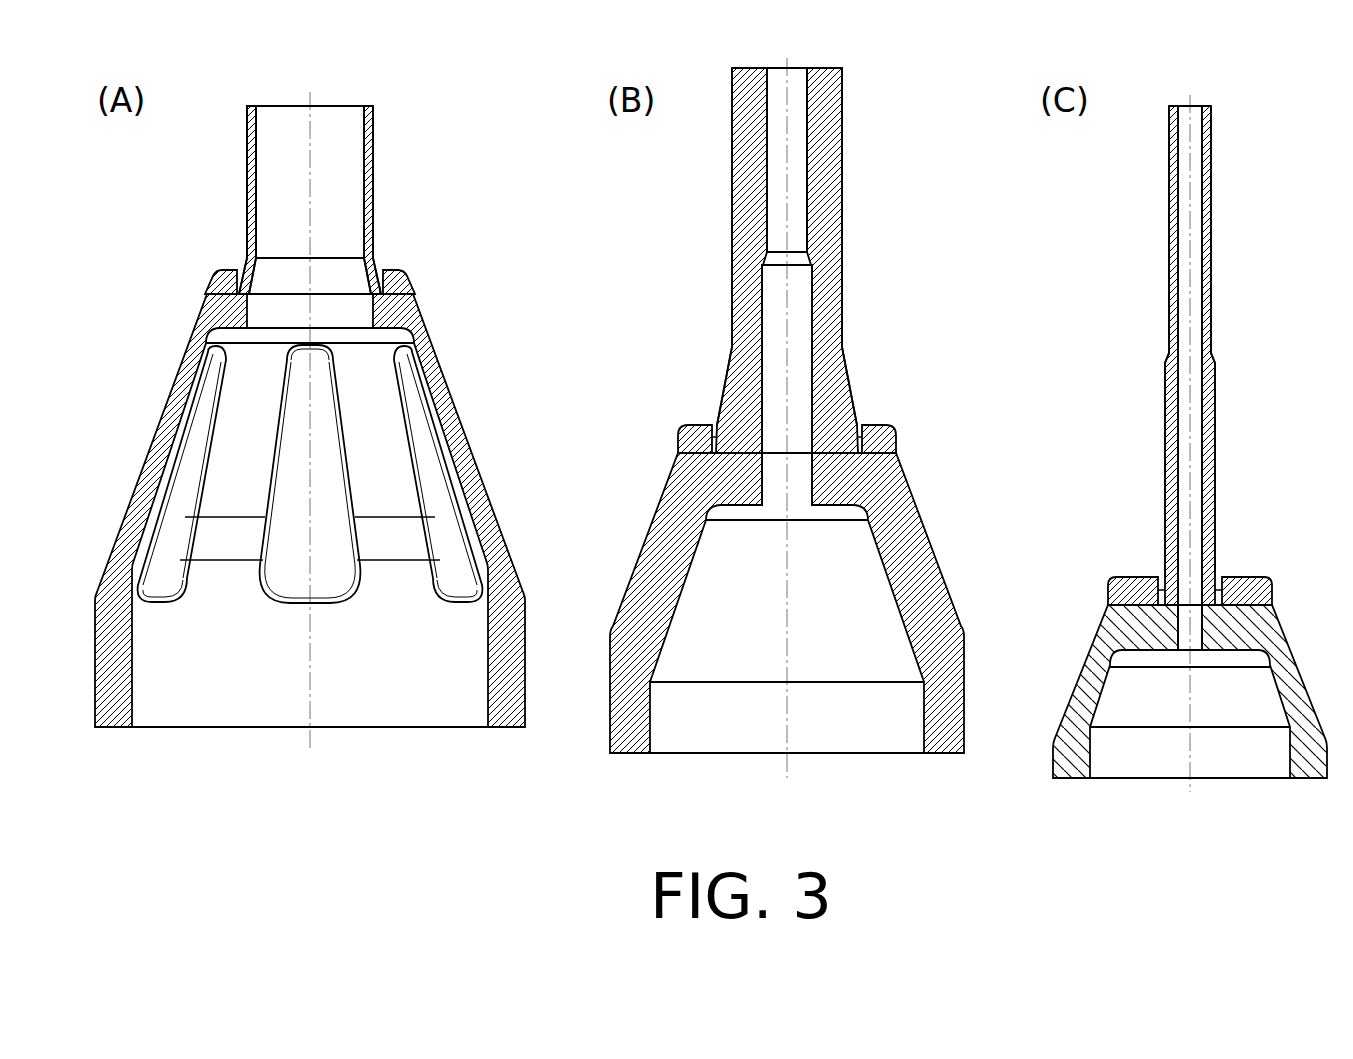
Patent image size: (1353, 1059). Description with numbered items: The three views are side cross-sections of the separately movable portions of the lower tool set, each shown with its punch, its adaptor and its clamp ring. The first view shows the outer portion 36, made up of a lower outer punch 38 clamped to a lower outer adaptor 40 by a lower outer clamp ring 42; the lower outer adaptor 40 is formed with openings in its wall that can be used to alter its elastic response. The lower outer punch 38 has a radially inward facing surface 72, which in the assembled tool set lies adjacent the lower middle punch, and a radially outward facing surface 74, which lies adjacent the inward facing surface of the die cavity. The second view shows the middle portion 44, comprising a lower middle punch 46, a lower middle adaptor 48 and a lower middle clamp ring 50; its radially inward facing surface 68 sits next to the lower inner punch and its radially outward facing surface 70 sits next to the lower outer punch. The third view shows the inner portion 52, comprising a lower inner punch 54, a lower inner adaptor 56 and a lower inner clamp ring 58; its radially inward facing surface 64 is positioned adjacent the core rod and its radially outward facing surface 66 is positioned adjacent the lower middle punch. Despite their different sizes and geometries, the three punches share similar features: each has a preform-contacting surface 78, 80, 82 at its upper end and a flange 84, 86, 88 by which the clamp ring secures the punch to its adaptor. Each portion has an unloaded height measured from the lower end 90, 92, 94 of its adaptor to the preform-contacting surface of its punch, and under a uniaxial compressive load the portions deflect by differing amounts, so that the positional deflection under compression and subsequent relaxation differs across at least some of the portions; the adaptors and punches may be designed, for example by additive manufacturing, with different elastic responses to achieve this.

In FIG. 3A, the outer portion 36 is at (453, 167).
In FIG. 3A, the lower outer punch 38 is at (374, 222).
In FIG. 3A, the lower outer adaptor 40 is at (428, 356).
In FIG. 3A, the lower outer clamp ring 42 is at (390, 288).
In FIG. 3A, the radially inward facing surface 72 is at (365, 153).
In FIG. 3A, the radially outward facing surface 74 is at (247, 200).
In FIG. 3A, the preform-contacting surface 78 is at (271, 99).
In FIG. 3A, the flange 84 is at (235, 288).
In FIG. 3A, the lower end 90 is at (200, 731).
In FIG. 3B, the middle portion 44 is at (904, 175).
In FIG. 3B, the lower middle punch 46 is at (830, 324).
In FIG. 3B, the lower middle adaptor 48 is at (905, 525).
In FIG. 3B, the lower middle clamp ring 50 is at (882, 441).
In FIG. 3B, the radially inward facing surface 68 is at (808, 137).
In FIG. 3B, the radially outward facing surface 70 is at (846, 240).
In FIG. 3B, the preform-contacting surface 80 is at (828, 66).
In FIG. 3B, the flange 86 is at (860, 445).
In FIG. 3B, the lower end 92 is at (692, 754).
In FIG. 3C, the inner portion 52 is at (1277, 160).
In FIG. 3C, the lower inner punch 54 is at (1214, 320).
In FIG. 3C, the lower inner adaptor 56 is at (1278, 640).
In FIG. 3C, the lower inner clamp ring 58 is at (1258, 592).
In FIG. 3C, the radially inward facing surface 64 is at (1206, 450).
In FIG. 3C, the radially outward facing surface 66 is at (1212, 256).
In FIG. 3C, the preform-contacting surface 82 is at (1194, 103).
In FIG. 3C, the flange 88 is at (1160, 586).
In FIG. 3C, the lower end 94 is at (1105, 780).